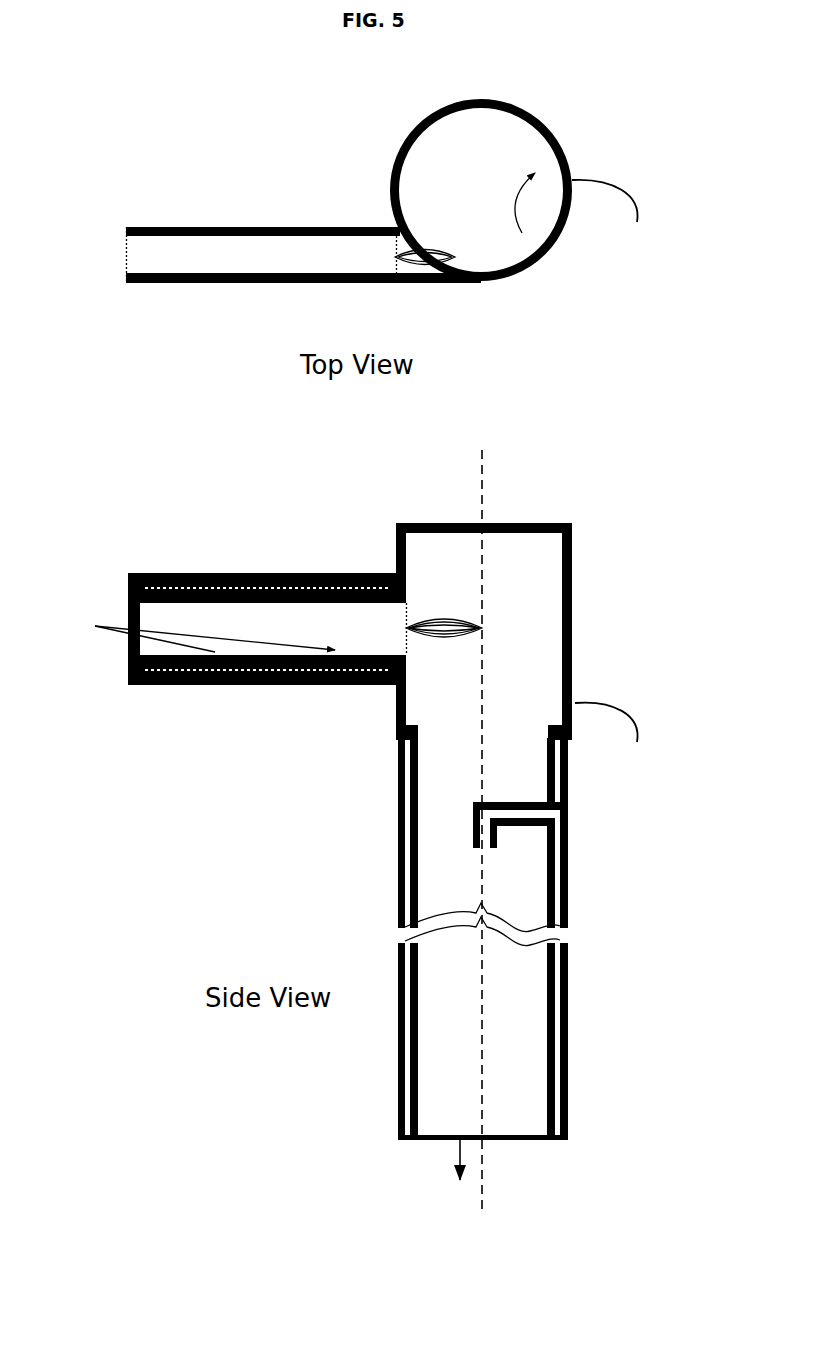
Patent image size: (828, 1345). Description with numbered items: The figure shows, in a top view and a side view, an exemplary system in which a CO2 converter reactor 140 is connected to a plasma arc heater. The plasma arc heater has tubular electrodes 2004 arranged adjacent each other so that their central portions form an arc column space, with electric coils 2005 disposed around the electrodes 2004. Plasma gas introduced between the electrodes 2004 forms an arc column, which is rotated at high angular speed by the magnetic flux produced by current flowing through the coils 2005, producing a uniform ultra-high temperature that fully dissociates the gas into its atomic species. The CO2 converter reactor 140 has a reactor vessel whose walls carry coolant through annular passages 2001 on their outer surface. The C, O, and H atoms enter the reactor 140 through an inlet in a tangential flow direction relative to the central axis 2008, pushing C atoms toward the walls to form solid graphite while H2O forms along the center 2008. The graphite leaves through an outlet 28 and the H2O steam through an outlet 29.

The CO2 converter reactor 140 is at (519, 311).
The passages 2001 is at (398, 878).
The electrodes 2004 is at (285, 600).
The coils 2005 is at (265, 600).
The central axis 2008 is at (483, 1197).
The outlet 28 is at (452, 1156).
The outlet 29 is at (577, 808).